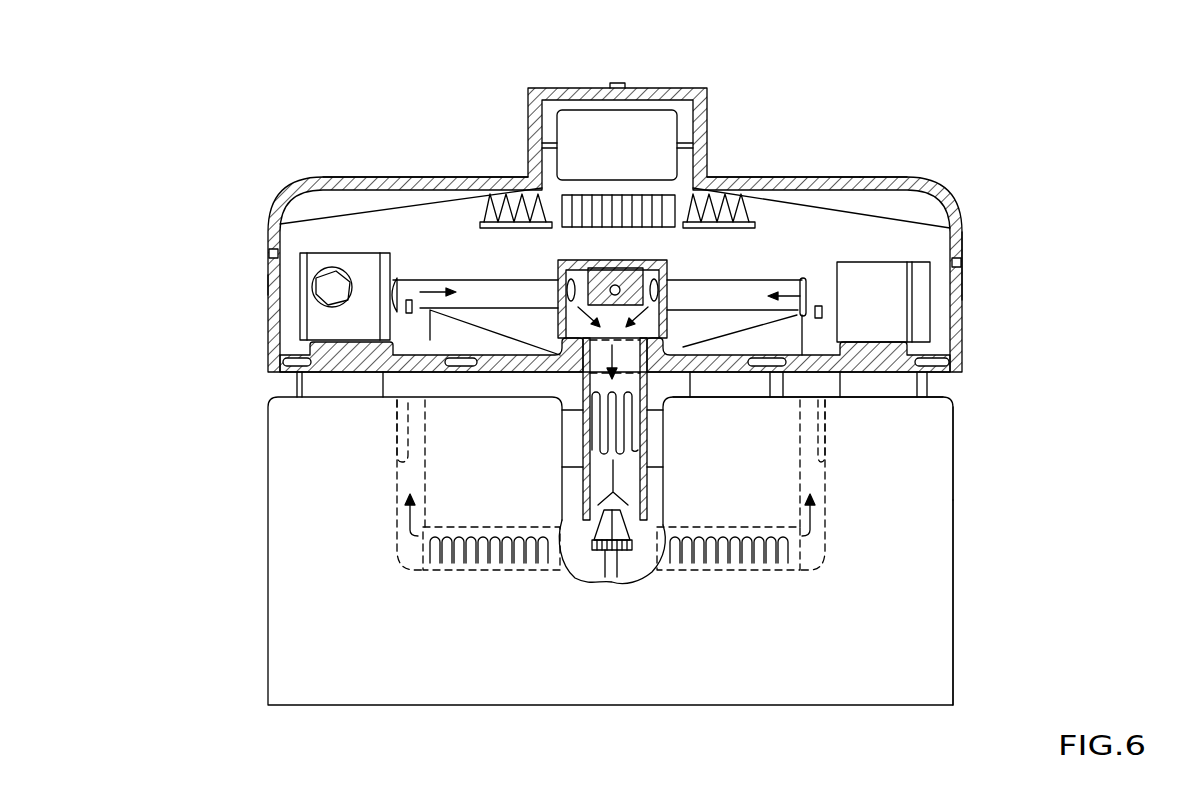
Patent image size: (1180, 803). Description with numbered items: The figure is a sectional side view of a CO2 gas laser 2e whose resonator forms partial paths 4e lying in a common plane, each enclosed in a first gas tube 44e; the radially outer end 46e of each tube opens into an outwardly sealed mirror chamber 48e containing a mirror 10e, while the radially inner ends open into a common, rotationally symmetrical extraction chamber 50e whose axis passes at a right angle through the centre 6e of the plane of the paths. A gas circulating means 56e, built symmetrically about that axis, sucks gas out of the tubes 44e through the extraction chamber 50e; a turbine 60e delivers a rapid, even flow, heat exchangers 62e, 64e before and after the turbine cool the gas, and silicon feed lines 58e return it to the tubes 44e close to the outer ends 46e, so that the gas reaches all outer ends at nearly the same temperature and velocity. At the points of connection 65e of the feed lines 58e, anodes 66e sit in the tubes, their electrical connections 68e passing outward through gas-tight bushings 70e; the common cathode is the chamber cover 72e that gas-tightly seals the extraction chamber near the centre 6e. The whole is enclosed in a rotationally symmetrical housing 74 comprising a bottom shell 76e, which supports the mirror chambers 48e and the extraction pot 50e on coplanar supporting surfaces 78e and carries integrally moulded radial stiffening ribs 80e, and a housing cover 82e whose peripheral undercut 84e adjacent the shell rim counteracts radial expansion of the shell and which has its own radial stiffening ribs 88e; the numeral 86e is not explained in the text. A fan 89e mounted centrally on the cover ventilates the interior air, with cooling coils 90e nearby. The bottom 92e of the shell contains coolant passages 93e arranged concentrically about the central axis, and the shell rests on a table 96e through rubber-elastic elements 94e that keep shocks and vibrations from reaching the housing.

The CO2 gas laser 2e is at (992, 419).
The partial path 4e is at (525, 284).
The centre 6e is at (598, 275).
The mirror 10e is at (300, 302).
The first gas tube 44e is at (477, 282).
The radially outer end 46e is at (399, 283).
The mirror chamber 48e is at (267, 210).
The extraction chamber 50e is at (655, 275).
The gas circulating means 56e is at (348, 547).
The feed line 58e is at (425, 490).
The turbine 60e is at (625, 590).
The heat exchanger 62e is at (580, 440).
The heat exchanger 64e is at (508, 547).
The point of connection 65e is at (418, 300).
The anode 66e is at (407, 340).
The electrical connection 68e is at (397, 425).
The gas-tight bushing 70e is at (397, 460).
The chamber cover 72e is at (607, 215).
The housing 74 is at (993, 278).
The bottom shell 76e is at (962, 310).
The supporting surface 78e is at (282, 346).
The radial stiffening rib 80e is at (300, 380).
The housing cover 82e is at (895, 180).
The peripheral undercut 84e is at (270, 256).
The housing wall 86e is at (272, 283).
The radial stiffening rib 88e is at (312, 190).
The fan 89e is at (643, 270).
The cooling coil 90e is at (498, 192).
The bottom 92e is at (887, 403).
The coolant passage 93e is at (285, 362).
The rubber-elastic element 94e is at (908, 384).
The table 96e is at (935, 570).